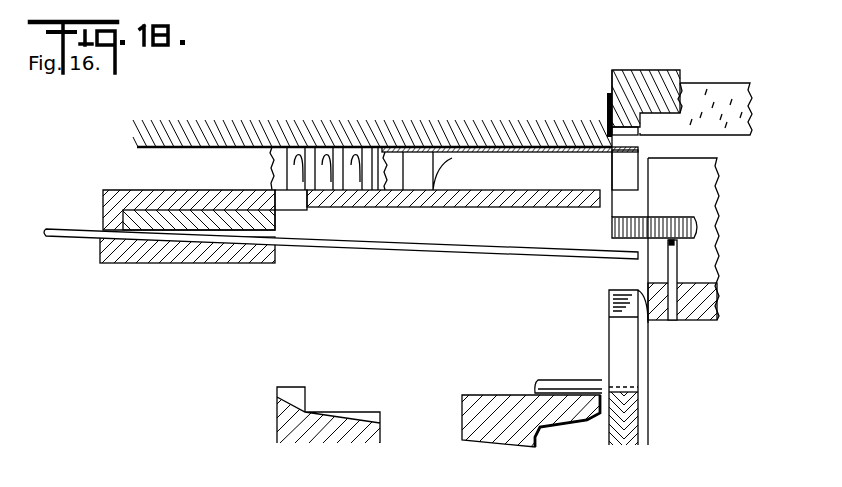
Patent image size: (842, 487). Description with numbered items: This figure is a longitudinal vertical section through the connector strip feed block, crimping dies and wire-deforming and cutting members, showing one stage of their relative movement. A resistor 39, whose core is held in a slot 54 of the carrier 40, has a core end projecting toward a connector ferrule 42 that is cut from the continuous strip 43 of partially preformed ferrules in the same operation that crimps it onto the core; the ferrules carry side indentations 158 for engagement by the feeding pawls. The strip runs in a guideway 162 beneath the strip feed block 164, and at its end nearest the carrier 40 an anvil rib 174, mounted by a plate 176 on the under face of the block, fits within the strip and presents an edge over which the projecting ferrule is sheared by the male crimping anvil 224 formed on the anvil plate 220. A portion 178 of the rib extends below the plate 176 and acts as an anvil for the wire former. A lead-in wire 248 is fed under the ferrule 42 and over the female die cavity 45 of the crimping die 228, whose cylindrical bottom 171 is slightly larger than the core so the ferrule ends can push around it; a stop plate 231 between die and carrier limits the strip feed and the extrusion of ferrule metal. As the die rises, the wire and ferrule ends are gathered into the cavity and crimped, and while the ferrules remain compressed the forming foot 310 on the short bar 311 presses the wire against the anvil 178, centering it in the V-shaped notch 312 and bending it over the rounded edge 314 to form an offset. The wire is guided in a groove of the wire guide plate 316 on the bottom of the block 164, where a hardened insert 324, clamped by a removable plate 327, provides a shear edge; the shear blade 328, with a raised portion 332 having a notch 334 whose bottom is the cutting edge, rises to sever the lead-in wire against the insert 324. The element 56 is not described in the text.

The resistor 39 is at (690, 216).
The carrier 40 is at (703, 287).
The connector ferrule 42 is at (622, 168).
The strip of ferrule-forming elements 43 is at (270, 166).
The female die cavity 45 is at (620, 332).
The slot 54 is at (715, 193).
The wall 56 is at (717, 163).
The indentation 158 is at (367, 152).
The guideway 162 is at (157, 150).
The strip feed block 164 is at (200, 137).
The bottom of the cavity 171 is at (627, 390).
The anvil rib 174 is at (479, 168).
The plate 176 is at (418, 205).
The anvil portion of the rib 178 is at (560, 208).
The anvil plate 220 is at (612, 75).
The crimping anvil 224 is at (622, 127).
The female crimping die 228 is at (625, 425).
The stop plate 231 is at (643, 412).
The lead-in wire 248 is at (72, 235).
The forming foot 310 is at (553, 408).
The bar 311 is at (490, 420).
The V-shaped notch 312 is at (562, 385).
The rounded edge 314 is at (587, 423).
The wire guide plate 316 is at (110, 210).
The hardened insert 324 is at (276, 222).
The removable plate 327 is at (148, 250).
The shear blade 328 is at (297, 430).
The raised portion 332 is at (305, 388).
The notch 334 is at (288, 397).